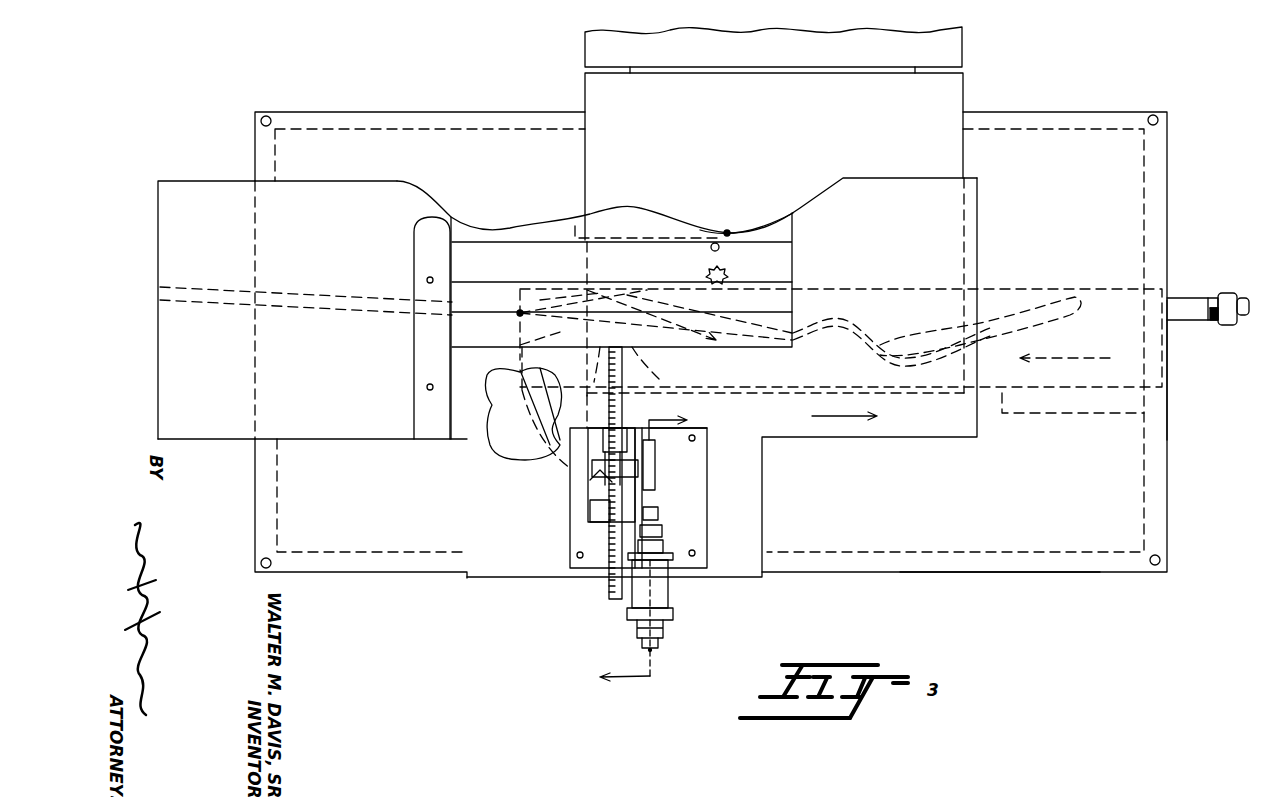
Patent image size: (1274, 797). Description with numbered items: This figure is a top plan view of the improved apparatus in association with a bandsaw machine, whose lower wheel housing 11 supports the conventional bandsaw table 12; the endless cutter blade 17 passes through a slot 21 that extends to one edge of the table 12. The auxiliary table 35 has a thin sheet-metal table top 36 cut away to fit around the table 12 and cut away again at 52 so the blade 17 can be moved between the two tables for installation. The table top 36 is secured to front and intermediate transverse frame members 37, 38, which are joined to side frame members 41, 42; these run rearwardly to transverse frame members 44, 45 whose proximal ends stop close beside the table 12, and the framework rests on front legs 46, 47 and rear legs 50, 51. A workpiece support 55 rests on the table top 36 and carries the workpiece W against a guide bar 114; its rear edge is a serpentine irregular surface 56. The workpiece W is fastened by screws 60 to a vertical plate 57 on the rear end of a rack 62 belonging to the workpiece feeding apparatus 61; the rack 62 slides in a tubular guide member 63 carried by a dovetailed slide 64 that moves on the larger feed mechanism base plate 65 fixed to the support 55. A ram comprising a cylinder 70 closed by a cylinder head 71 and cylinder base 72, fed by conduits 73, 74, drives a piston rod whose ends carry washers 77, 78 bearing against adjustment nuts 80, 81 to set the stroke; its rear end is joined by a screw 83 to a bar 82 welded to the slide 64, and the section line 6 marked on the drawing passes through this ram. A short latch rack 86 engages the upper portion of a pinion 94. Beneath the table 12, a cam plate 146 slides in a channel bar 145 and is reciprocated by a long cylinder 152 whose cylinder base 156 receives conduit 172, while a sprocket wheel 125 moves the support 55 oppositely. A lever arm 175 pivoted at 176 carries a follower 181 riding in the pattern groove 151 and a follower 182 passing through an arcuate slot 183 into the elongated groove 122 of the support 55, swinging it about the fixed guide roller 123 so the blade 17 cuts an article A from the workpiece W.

The section line 6- 6 is at (640, 549).
The lower wheel housing 11 is at (745, 48).
The bandsaw table 12 is at (585, 74).
The endless cutter blade 17 is at (727, 230).
The slot 21 is at (645, 236).
The auxiliary table 35 is at (245, 487).
The auxiliary table top 36 is at (372, 575).
The front transverse frame member 37 is at (1060, 572).
The intermediate transverse frame member 38 is at (1108, 414).
The frame member 41 is at (1170, 457).
The frame member 42 is at (256, 511).
The transverse frame member 44 is at (1056, 112).
The transverse frame member 45 is at (408, 112).
The front leg 46 is at (1156, 568).
The front leg 47 is at (277, 571).
The rear leg 50 is at (1156, 116).
The rear leg 51 is at (270, 114).
The cut-away 52 is at (552, 182).
The workpiece support 55 is at (158, 222).
The irregular surface 56 is at (420, 208).
The vertically disposed plate 57 is at (556, 347).
The screws 60 is at (588, 347).
The workpiece feeding apparatus 61 is at (560, 530).
The rack 62 is at (623, 410).
The tubular guide member 63 is at (600, 436).
The dovetailed slide 64 is at (590, 494).
The feed mechanism base plate 65 is at (700, 488).
The cylinder 70 is at (669, 598).
The cylinder head 71 is at (658, 560).
The cylinder base 72 is at (628, 618).
The conduit 73 is at (660, 548).
The conduit 74 is at (662, 632).
The washer 77 is at (662, 532).
The washer 78 is at (640, 642).
The adjustment nut 80 is at (658, 512).
The adjustment nut 81 is at (654, 650).
The bar 82 is at (604, 518).
The screw 83 is at (652, 504).
The short rack 86 is at (645, 468).
The pinion 94 is at (615, 440).
The guide bar 114 is at (416, 351).
The elongated groove 122 is at (326, 294).
The fixed guide roller 123 is at (710, 250).
The sprocket wheel 125 is at (728, 270).
The channel bar 145 is at (806, 300).
The cam plate 146 is at (1020, 302).
The pattern groove 151 is at (1058, 332).
The cylinder 152 is at (1188, 322).
The cylinder base 156 is at (1228, 292).
The conduit 172 is at (1246, 298).
The lever arm 175 is at (608, 296).
The pivot point 176 is at (738, 308).
The follower 181 is at (794, 348).
The follower 182 is at (514, 310).
The arcuate slot 183 is at (534, 412).
The article A is at (750, 218).
The workpiece W is at (796, 252).